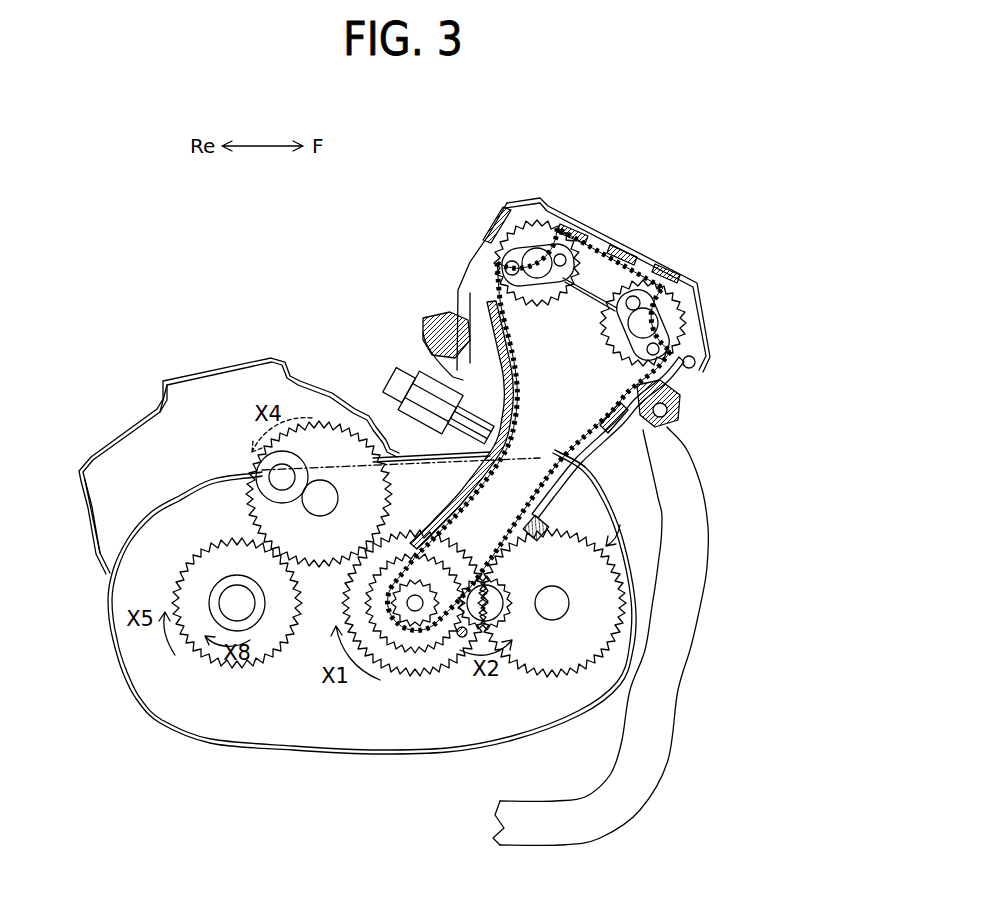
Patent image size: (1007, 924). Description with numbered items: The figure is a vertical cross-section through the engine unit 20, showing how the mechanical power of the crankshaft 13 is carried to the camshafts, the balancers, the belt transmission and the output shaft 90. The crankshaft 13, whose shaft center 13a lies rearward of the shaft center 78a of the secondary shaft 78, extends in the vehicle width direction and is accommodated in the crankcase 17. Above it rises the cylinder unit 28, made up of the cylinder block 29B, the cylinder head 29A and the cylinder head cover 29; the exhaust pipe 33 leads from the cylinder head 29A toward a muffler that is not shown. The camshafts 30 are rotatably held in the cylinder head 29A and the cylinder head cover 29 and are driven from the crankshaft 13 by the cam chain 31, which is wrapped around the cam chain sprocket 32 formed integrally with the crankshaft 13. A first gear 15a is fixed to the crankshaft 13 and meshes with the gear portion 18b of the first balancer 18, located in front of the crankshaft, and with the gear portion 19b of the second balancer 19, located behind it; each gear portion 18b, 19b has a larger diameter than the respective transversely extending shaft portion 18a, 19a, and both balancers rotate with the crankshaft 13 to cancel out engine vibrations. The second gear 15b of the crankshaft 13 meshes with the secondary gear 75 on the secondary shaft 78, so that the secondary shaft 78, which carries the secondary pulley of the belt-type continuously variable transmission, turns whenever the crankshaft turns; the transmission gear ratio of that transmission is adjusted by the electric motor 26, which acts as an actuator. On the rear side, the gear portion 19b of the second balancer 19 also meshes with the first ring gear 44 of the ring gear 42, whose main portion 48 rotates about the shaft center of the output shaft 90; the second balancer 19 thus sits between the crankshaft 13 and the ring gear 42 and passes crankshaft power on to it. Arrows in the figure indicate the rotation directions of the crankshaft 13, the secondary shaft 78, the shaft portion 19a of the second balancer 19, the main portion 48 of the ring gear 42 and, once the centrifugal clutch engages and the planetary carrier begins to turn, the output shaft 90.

The crankshaft 13 is at (590, 497).
The shaft center of the crankshaft 13a is at (433, 640).
The first gear 15a is at (412, 430).
The second gear 15b is at (390, 632).
The crankcase 17 is at (108, 632).
The first balancer 18 is at (620, 526).
The shaft portion of the first balancer 18a is at (572, 606).
The gear portion of the first balancer 18b is at (580, 675).
The second balancer 19 is at (203, 545).
The shaft portion of the second balancer 19a is at (323, 480).
The gear portion of the second balancer 19b is at (385, 452).
The engine unit 20 is at (712, 263).
The electric motor 26 is at (258, 476).
The cylinder unit 28 is at (482, 238).
The cylinder head cover 29 is at (506, 200).
The cylinder head 29A is at (452, 305).
The cylinder block 29B is at (486, 335).
The camshafts 30 is at (652, 310).
The cam chain 31 is at (675, 390).
The cam chain sprocket 32 is at (418, 636).
The exhaust pipe 33 is at (688, 570).
The ring gear 42 is at (237, 673).
The first ring gear 44 is at (200, 570).
The main portion of the ring gear 48 is at (105, 490).
The secondary gear 75 is at (466, 637).
The secondary shaft 78 is at (503, 622).
The shaft center of the secondary shaft 78a is at (480, 630).
The output shaft 90 is at (217, 617).